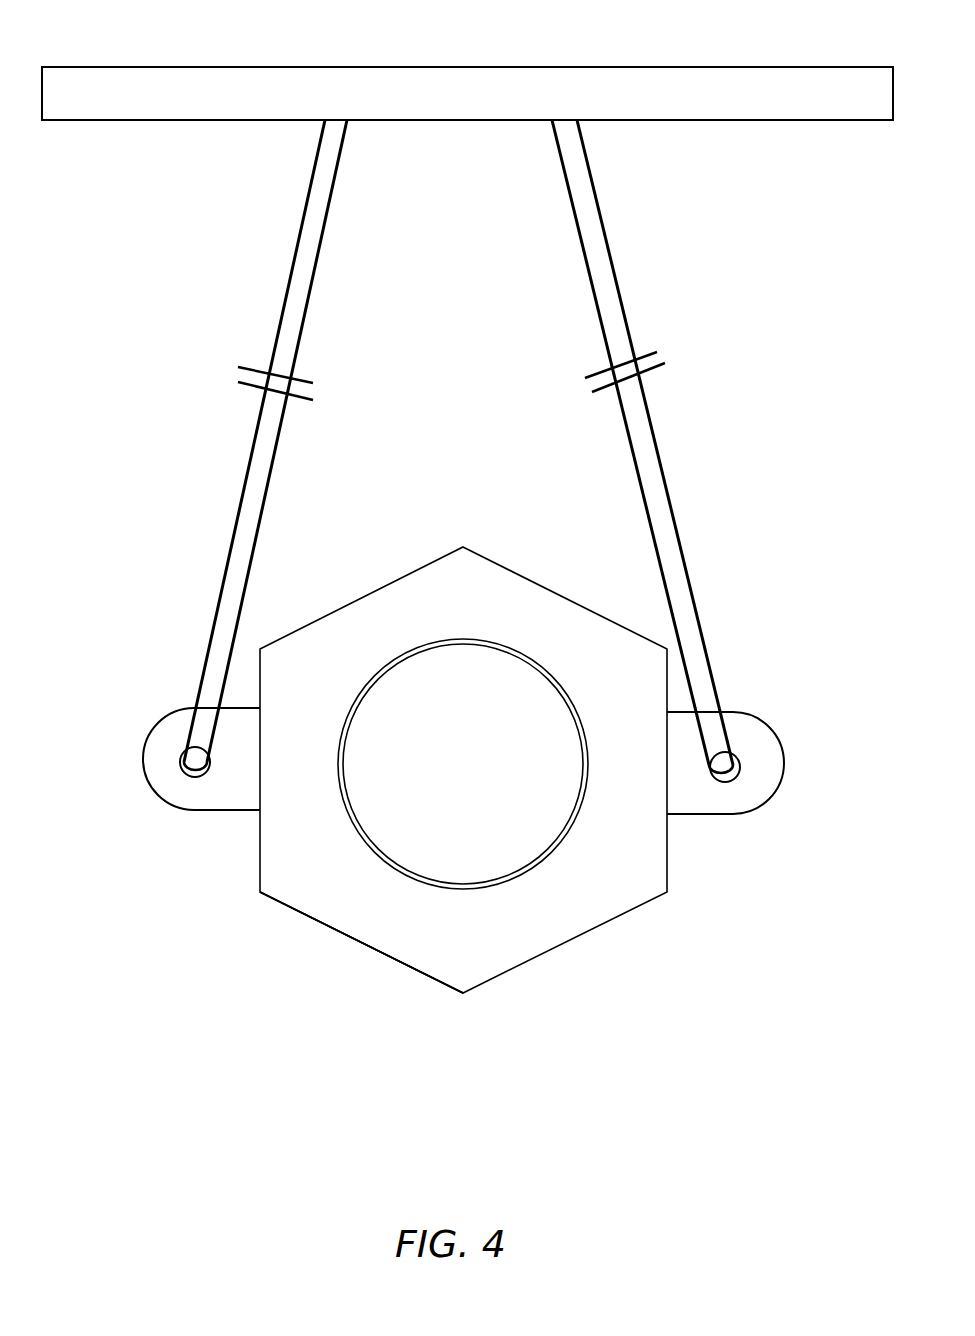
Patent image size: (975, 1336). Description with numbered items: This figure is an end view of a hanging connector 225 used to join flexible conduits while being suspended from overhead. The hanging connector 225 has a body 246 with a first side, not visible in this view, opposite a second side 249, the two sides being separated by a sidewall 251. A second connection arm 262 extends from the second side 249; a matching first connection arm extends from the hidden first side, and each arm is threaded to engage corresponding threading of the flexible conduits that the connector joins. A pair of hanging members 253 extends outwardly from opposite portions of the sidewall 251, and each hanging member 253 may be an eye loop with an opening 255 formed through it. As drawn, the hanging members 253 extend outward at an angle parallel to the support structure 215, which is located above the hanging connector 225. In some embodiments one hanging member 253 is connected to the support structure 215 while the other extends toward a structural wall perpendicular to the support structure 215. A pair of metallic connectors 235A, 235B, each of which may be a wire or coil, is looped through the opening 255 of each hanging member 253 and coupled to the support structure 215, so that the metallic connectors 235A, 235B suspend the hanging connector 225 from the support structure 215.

The support structure 215 is at (150, 68).
The metallic connector 235A is at (291, 272).
The metallic connector 235B is at (589, 273).
The hanging connector 225 is at (733, 537).
The body 246 is at (618, 889).
The second side 249 is at (398, 940).
The sidewall 251 is at (316, 918).
The hanging member 253 is at (178, 804).
The opening 255 is at (746, 768).
The second connection arm 262 is at (554, 858).